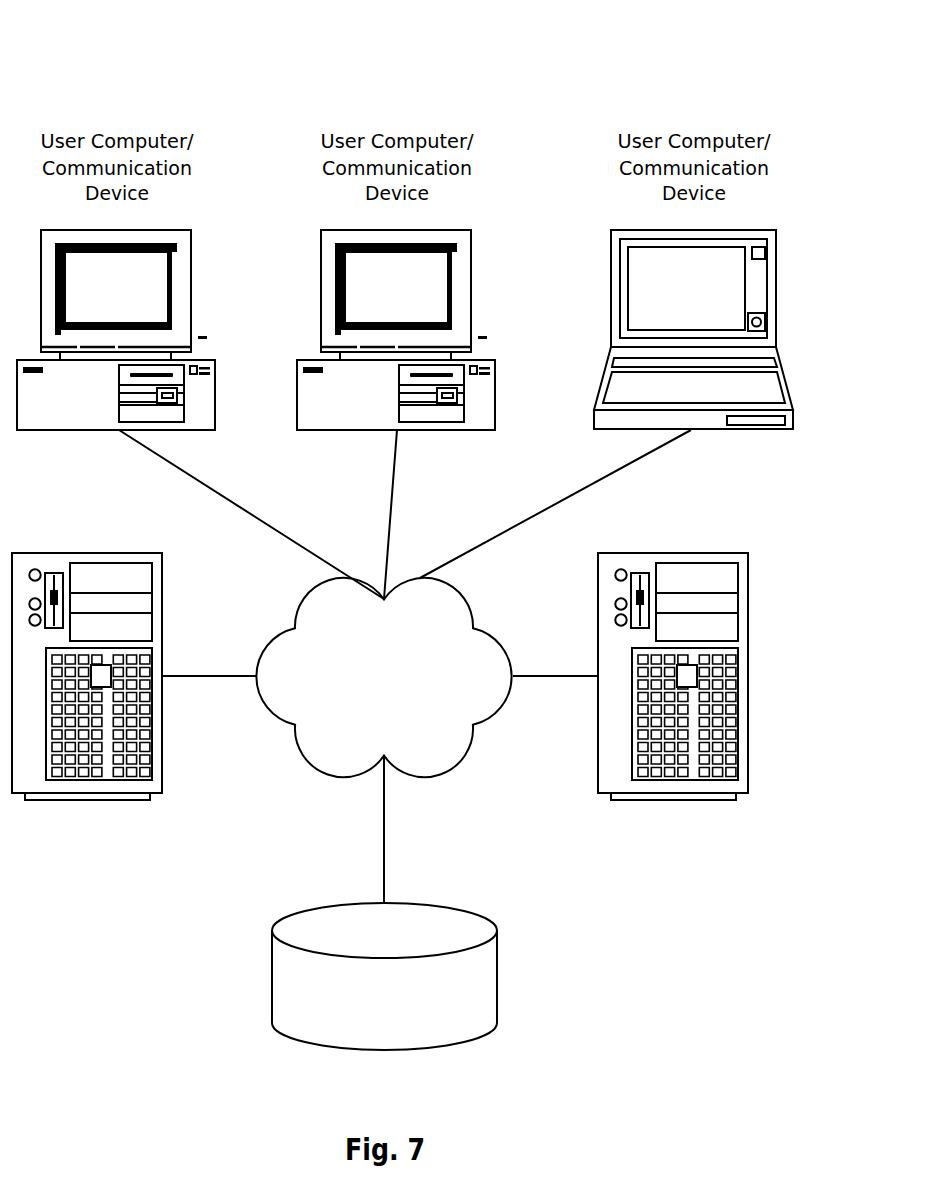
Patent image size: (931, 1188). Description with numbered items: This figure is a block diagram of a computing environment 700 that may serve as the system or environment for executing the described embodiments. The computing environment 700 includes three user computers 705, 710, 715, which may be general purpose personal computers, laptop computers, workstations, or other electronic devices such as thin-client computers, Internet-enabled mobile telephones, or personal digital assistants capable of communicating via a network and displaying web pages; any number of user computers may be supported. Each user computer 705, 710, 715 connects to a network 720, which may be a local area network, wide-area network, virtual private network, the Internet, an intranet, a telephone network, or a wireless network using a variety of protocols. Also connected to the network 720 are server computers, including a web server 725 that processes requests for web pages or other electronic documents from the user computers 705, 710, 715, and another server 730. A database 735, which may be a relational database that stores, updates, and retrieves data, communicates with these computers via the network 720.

The computing environment 700 is at (157, 84).
The user computer 705 is at (215, 430).
The user computer 710 is at (495, 430).
The user computer 715 is at (740, 430).
The network 720 is at (442, 770).
The web server 725 is at (162, 760).
The server computer 730 is at (748, 760).
The database 735 is at (497, 977).